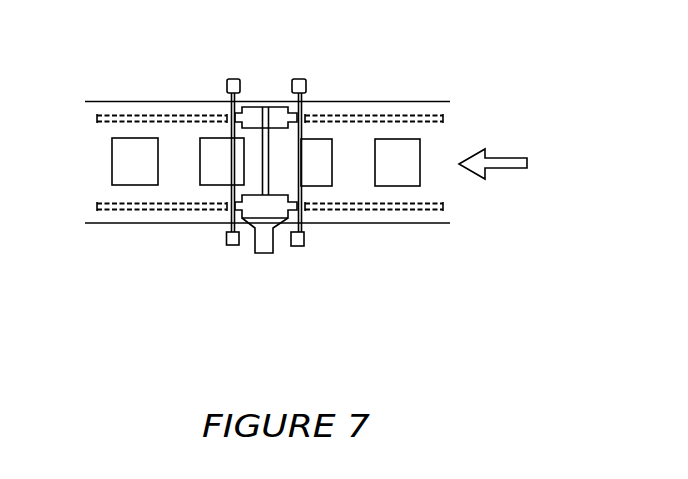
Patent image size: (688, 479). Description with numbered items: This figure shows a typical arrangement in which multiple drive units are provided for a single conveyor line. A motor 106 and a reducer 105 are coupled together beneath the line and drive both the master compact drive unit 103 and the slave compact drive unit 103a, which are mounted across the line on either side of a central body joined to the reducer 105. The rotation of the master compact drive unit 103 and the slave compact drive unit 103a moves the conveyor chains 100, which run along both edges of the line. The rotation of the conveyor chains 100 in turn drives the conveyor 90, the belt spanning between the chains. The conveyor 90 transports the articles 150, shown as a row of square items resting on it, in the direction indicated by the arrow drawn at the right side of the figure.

The conveyor 90 is at (257, 187).
The conveyor chains 100 is at (302, 163).
The articles 150 is at (266, 107).
The master compact drive unit 103 is at (351, 187).
The slave compact drive unit 103a is at (319, 137).
The reducer 105 is at (220, 253).
The motor 106 is at (321, 280).